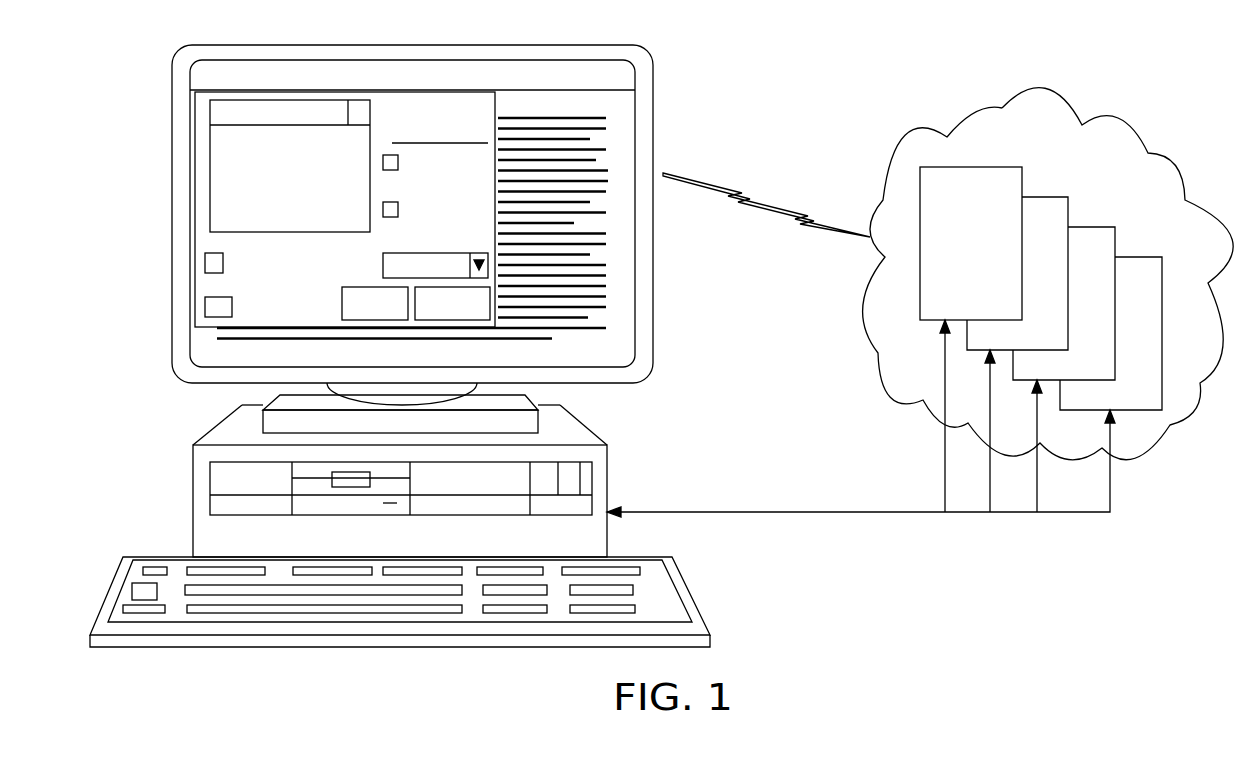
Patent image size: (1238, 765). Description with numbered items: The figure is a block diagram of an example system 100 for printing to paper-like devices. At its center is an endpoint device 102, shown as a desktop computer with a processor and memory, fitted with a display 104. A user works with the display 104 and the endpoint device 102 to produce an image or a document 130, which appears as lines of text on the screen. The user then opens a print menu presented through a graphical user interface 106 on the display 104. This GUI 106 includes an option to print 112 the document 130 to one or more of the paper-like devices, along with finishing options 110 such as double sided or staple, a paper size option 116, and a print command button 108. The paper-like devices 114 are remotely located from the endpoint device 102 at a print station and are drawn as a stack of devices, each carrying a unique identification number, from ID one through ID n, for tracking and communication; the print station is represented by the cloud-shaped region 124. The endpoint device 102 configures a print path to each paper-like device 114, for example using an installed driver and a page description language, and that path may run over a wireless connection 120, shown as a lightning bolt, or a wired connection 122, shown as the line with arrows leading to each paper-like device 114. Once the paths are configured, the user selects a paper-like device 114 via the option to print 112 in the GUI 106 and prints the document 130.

The system 100 is at (857, 51).
The endpoint device 102 is at (607, 482).
The display 104 is at (653, 88).
The graphical user interface 106 is at (323, 98).
The print command button 108 is at (368, 285).
The finishing options 110 is at (470, 107).
The option to print 112 is at (217, 110).
The paper-like device 114 is at (977, 167).
The paper size option 116 is at (490, 228).
The wireless connection 120 is at (768, 202).
The wired connection 122 is at (799, 512).
The network cloud 124 is at (1045, 90).
The document 130 is at (603, 170).